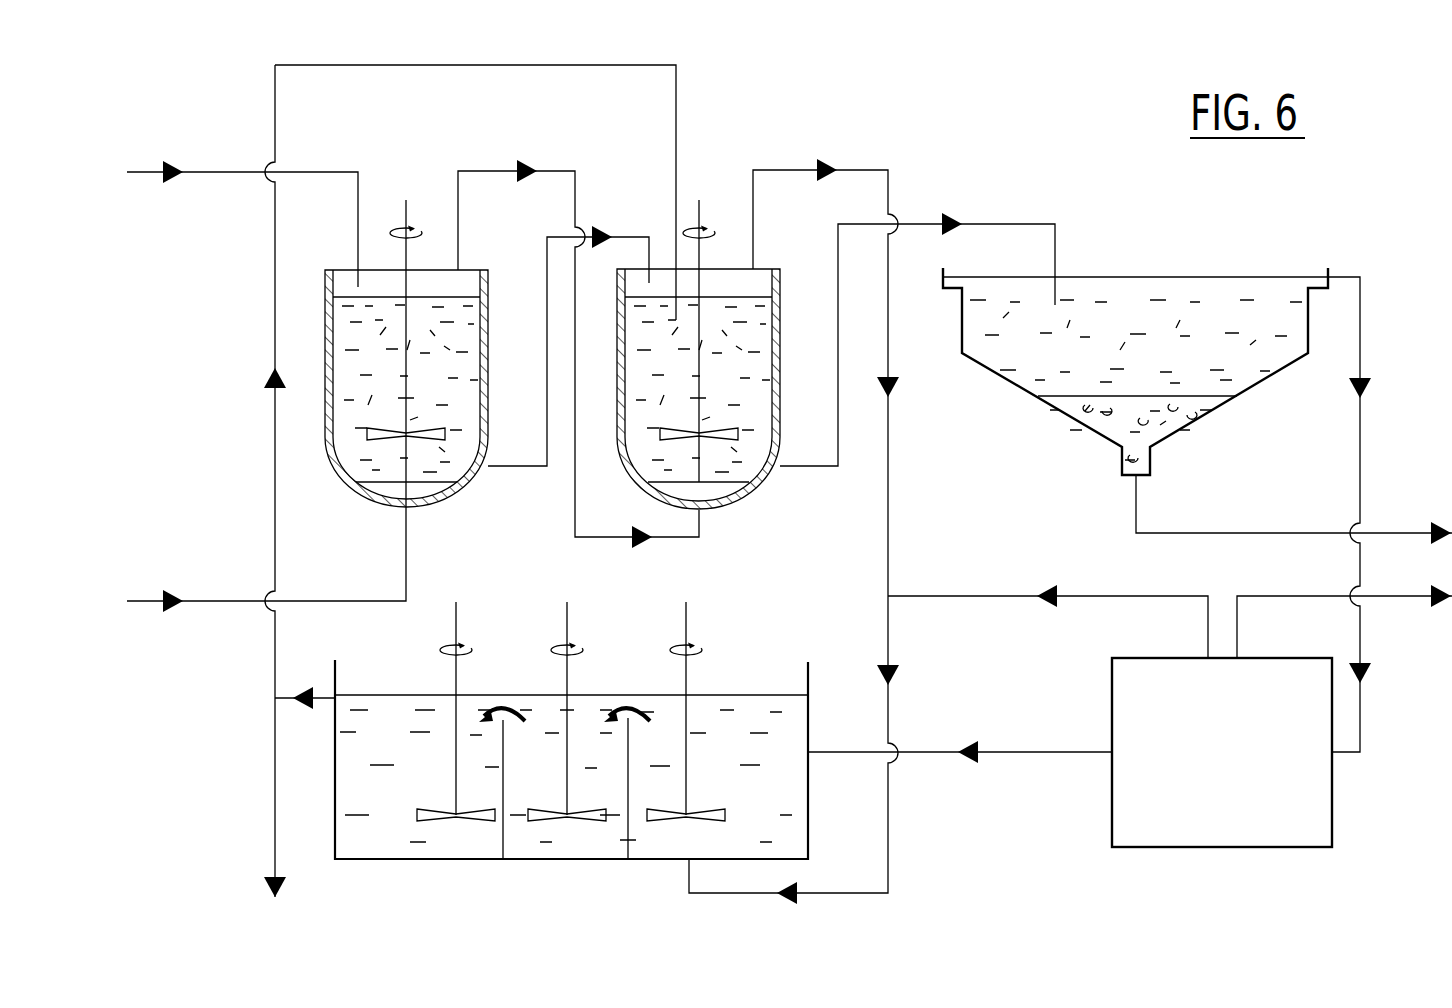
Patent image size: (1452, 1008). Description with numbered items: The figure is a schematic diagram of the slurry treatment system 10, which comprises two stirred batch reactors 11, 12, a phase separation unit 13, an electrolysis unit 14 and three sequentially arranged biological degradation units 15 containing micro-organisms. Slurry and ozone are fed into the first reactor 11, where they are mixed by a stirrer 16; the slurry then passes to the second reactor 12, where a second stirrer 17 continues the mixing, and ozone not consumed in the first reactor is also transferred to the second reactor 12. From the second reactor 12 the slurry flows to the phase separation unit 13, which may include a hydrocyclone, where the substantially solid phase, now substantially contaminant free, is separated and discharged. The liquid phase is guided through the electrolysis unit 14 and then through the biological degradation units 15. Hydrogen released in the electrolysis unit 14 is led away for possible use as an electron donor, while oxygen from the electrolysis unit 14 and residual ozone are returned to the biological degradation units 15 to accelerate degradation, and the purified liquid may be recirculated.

The system 10 is at (725, 155).
The first stirred batch reactor 11 is at (447, 497).
The second stirred batch reactor 12 is at (757, 485).
The phase separation unit 13 is at (1242, 292).
The electrolysis unit 14 is at (1312, 832).
The biological degradation units 15 is at (363, 850).
The stirrer 16 is at (366, 438).
The second stirrer 17 is at (659, 440).